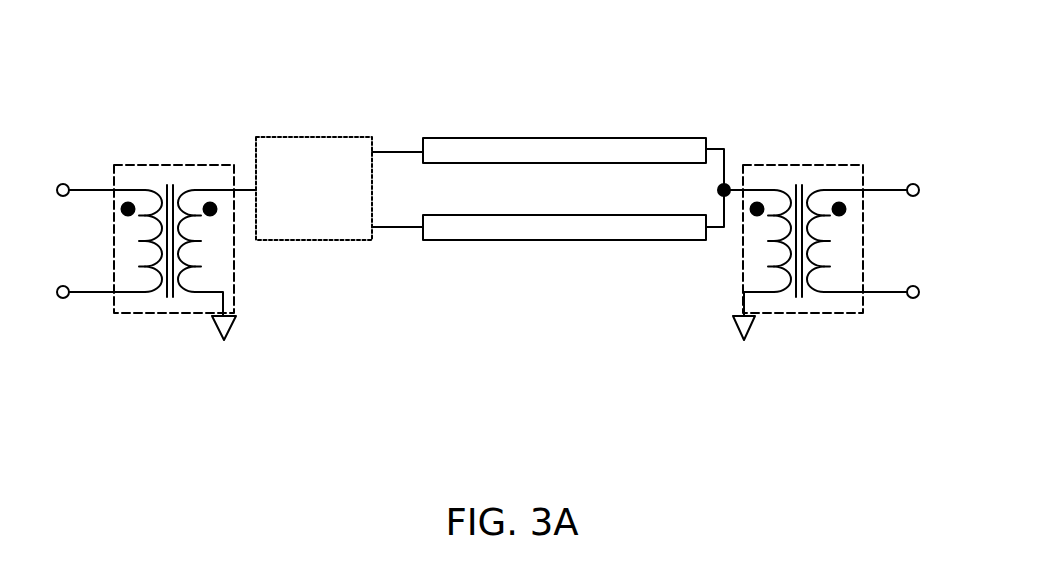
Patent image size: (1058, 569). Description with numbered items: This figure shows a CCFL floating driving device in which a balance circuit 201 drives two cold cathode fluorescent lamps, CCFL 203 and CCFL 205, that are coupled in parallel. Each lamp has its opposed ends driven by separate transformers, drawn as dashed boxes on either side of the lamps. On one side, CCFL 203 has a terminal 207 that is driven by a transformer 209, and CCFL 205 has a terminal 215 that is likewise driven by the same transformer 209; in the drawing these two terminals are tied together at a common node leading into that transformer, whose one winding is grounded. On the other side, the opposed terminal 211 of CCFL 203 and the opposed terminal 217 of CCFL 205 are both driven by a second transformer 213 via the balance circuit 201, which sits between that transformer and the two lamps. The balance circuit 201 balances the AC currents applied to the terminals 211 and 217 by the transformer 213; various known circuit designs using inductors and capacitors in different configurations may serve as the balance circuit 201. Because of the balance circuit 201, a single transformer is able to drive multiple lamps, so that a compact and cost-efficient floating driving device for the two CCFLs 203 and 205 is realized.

The balance circuit 201 is at (323, 240).
The CCFL 203 is at (622, 150).
The CCFL 205 is at (623, 233).
The terminal 207 is at (708, 148).
The transformer 209 is at (820, 313).
The terminal 211 is at (420, 149).
The transformer 213 is at (178, 315).
The terminal 215 is at (712, 238).
The terminal 217 is at (420, 230).